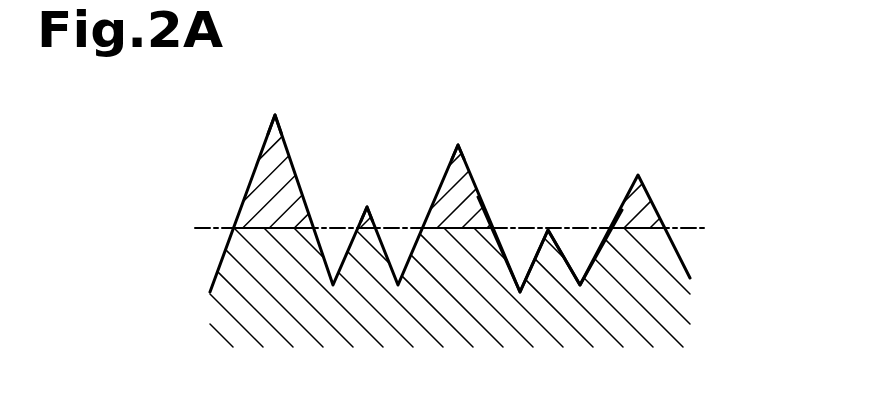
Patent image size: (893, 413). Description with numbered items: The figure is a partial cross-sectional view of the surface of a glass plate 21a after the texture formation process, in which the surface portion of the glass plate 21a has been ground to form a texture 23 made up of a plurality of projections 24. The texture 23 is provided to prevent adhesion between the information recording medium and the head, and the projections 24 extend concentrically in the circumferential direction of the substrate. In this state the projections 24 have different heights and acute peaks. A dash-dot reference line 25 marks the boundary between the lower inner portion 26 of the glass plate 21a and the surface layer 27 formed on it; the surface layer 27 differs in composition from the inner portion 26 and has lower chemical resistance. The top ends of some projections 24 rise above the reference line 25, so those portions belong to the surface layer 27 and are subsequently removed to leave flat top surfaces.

The glass plate 21a is at (626, 123).
The texture 23 is at (478, 197).
The projections 24 is at (272, 134).
The reference line 25 is at (687, 227).
The inner portion 26 is at (467, 332).
The surface layer 27 is at (287, 168).